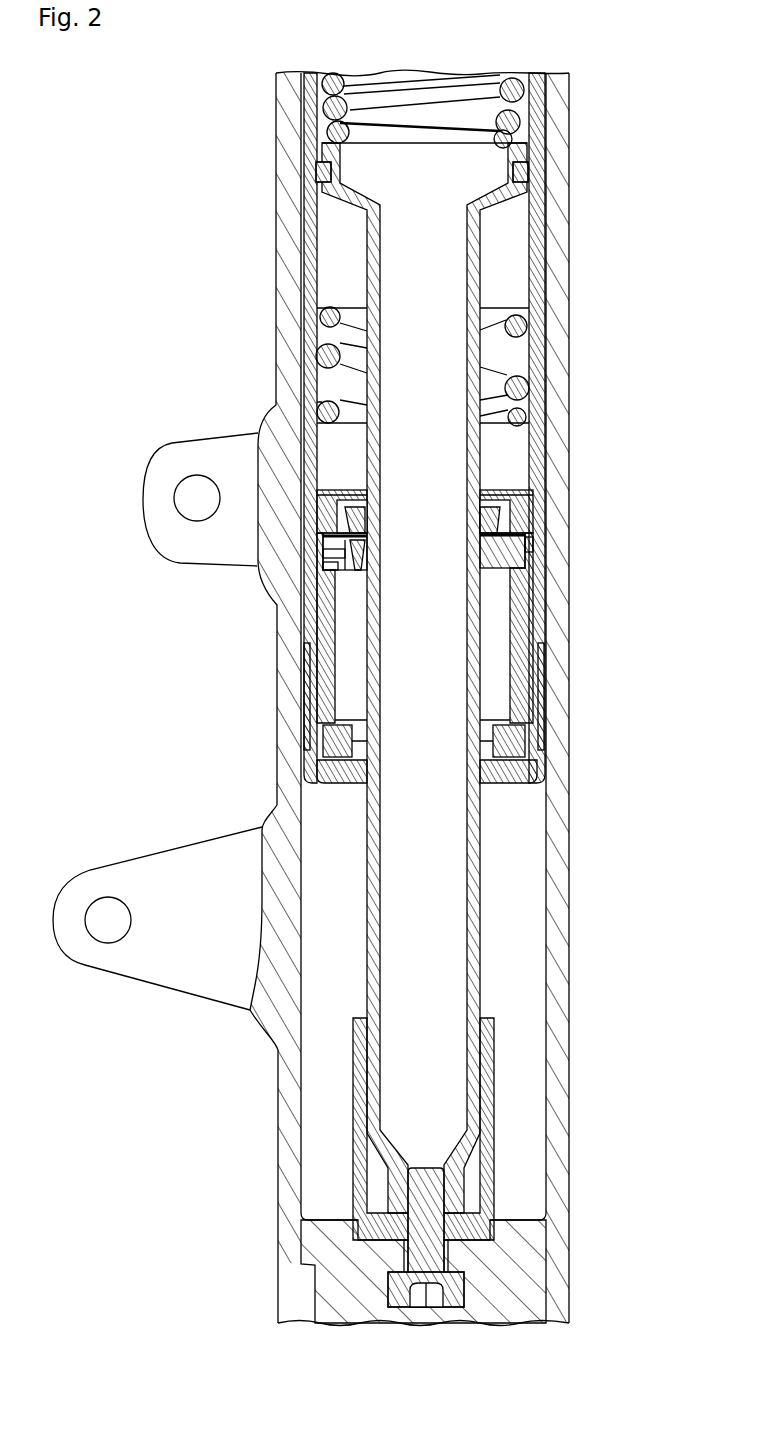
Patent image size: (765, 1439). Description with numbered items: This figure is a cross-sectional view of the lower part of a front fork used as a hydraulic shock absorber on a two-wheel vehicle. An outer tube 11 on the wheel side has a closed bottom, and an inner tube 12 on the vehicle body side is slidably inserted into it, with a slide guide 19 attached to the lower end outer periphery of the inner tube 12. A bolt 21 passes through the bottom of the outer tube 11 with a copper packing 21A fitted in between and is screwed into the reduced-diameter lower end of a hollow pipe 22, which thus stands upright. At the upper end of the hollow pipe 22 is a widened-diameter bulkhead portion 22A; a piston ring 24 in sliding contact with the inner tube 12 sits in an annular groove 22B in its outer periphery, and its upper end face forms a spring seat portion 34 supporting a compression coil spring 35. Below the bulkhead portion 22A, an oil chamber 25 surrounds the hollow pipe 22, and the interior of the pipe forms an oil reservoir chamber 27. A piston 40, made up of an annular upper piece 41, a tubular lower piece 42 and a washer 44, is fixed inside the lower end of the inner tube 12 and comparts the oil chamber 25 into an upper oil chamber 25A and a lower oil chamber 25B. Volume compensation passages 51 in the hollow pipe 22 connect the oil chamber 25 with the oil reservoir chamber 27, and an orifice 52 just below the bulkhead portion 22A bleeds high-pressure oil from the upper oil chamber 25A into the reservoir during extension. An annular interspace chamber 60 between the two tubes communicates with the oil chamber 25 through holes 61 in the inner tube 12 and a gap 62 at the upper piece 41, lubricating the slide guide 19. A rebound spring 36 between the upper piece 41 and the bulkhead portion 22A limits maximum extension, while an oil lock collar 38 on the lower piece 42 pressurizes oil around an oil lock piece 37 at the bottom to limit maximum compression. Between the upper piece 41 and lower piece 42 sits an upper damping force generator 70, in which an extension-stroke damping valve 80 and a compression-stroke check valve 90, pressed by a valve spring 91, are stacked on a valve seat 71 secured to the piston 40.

The outer tube 11 is at (276, 122).
The inner tube 12 is at (310, 86).
The slide guide 19 is at (306, 690).
The bolt 21 is at (457, 1297).
The copper packing 21A is at (470, 1272).
The hollow pipe 22 is at (470, 886).
The bulkhead portion 22A is at (327, 148).
The annular groove 22B is at (320, 172).
The piston ring 24 is at (323, 186).
The oil chamber 25 is at (333, 245).
The upper oil chamber 25A is at (333, 270).
The lower oil chamber 25B is at (330, 808).
The oil reservoir chamber 27 is at (463, 171).
The spring seat portion 34 is at (515, 146).
The compression coil spring 35 is at (521, 88).
The rebound spring 36 is at (520, 328).
The oil lock piece 37 is at (490, 1066).
The oil lock collar 38 is at (524, 737).
The piston 40 is at (521, 662).
The upper piece 41 is at (533, 500).
The lower piece 42 is at (522, 690).
The washer 44 is at (533, 774).
The volume compensation passage 51 is at (476, 990).
The orifice 52 is at (470, 289).
The annular interspace chamber 60 is at (568, 232).
The hole 61 is at (538, 542).
The gap 62 is at (528, 552).
The upper damping force generator 70 is at (341, 483).
The valve seat 71 is at (320, 592).
The extension-stroke damping valve 80 is at (323, 522).
The compression-stroke check valve 90 is at (323, 511).
The valve spring 91 is at (336, 498).